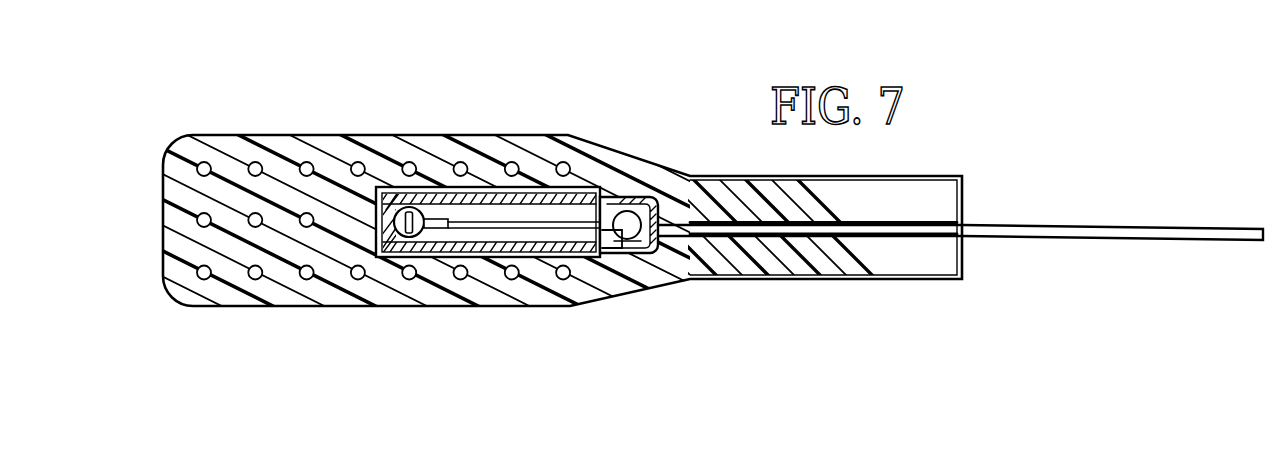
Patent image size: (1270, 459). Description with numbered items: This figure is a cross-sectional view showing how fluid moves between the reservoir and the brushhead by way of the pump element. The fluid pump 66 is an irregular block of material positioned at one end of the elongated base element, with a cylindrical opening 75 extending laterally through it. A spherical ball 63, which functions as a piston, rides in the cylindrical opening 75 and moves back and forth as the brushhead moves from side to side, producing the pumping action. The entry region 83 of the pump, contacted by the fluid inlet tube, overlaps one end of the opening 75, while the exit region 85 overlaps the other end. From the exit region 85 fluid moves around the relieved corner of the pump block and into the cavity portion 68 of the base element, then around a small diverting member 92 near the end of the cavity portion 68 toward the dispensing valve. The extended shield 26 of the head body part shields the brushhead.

The cavity portion 68 is at (532, 212).
The cylindrical opening 75 is at (621, 199).
The entry region 83 is at (644, 196).
The fluid pump 66 is at (660, 250).
The spherical ball 63 is at (634, 250).
The exit region 85 is at (607, 254).
The diverting member 92 is at (433, 226).
The extended shield 26 is at (488, 250).